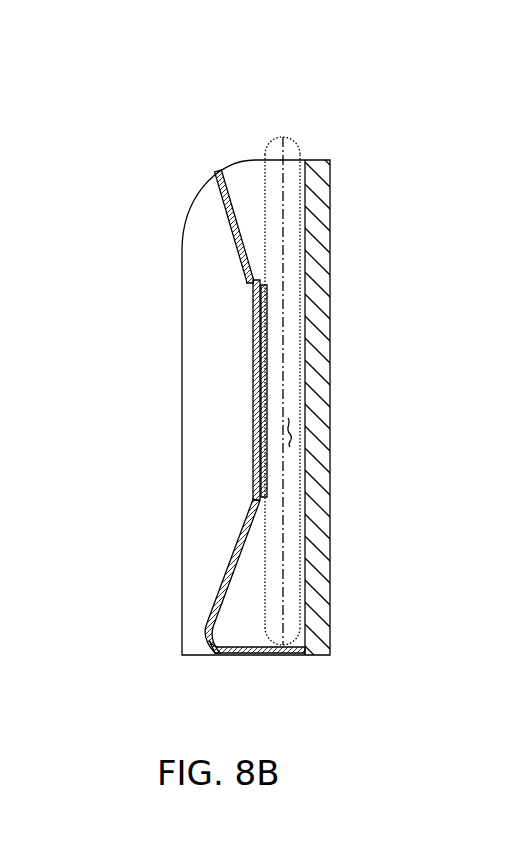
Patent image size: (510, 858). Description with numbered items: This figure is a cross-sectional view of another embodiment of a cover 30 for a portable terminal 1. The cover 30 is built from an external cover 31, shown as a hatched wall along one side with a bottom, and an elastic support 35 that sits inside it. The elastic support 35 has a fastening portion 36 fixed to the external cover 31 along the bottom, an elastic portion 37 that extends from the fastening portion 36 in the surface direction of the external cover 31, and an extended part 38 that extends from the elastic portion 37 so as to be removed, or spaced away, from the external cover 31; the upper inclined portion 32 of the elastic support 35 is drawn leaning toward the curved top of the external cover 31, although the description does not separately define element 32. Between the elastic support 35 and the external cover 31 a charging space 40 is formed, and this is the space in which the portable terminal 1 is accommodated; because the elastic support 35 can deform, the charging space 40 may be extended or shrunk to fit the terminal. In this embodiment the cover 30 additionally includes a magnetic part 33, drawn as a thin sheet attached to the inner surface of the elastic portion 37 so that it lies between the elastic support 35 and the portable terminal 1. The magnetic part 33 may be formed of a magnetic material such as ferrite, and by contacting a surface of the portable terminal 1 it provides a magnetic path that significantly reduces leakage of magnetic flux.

The cover 30 is at (280, 58).
The portable terminal 1 is at (303, 150).
The external cover 31 is at (316, 226).
The inclined portion of heat conduction member 32 is at (244, 192).
The magnetic part 33 is at (268, 374).
The elastic support 35 is at (171, 401).
The fastening portion 36 is at (200, 672).
The elastic portion 37 is at (252, 446).
The extended part 38 is at (242, 234).
The charging space 40 is at (300, 427).